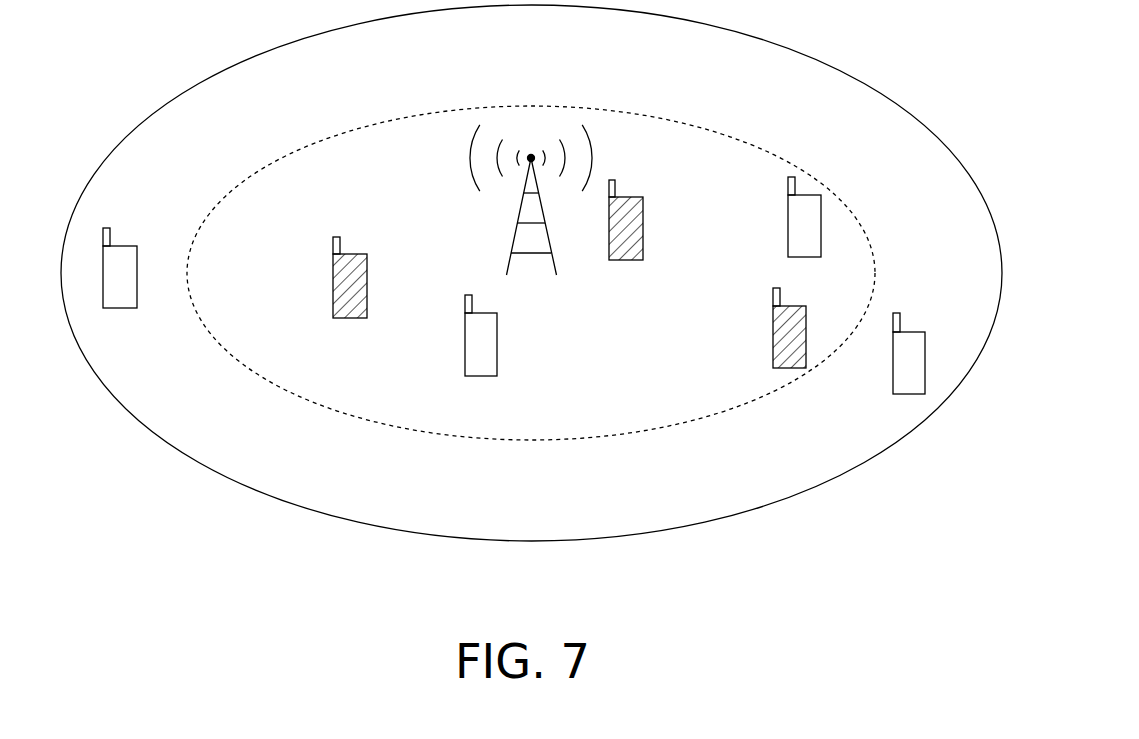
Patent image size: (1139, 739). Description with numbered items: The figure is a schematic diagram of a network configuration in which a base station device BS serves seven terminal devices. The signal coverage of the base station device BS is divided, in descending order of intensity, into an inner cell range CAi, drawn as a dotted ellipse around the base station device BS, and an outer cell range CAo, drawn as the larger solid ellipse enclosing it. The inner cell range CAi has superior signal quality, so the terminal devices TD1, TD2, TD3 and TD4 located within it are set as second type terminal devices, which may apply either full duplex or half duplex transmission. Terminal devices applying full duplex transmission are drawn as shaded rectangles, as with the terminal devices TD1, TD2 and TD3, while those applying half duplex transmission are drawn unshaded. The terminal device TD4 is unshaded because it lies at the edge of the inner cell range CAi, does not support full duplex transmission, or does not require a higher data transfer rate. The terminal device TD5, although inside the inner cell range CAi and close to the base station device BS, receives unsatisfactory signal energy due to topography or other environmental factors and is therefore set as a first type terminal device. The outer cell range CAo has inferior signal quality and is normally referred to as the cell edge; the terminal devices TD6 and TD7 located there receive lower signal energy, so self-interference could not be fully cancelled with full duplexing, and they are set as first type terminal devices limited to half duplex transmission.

The outer cell range CAo is at (1002, 272).
The inner cell range CAi is at (875, 272).
The base station device BS is at (530, 255).
The terminal device TD1 is at (350, 318).
The terminal device TD2 is at (773, 335).
The terminal device TD3 is at (624, 260).
The terminal device TD4 is at (788, 222).
The terminal device TD5 is at (481, 376).
The terminal device TD6 is at (120, 308).
The terminal device TD7 is at (907, 332).